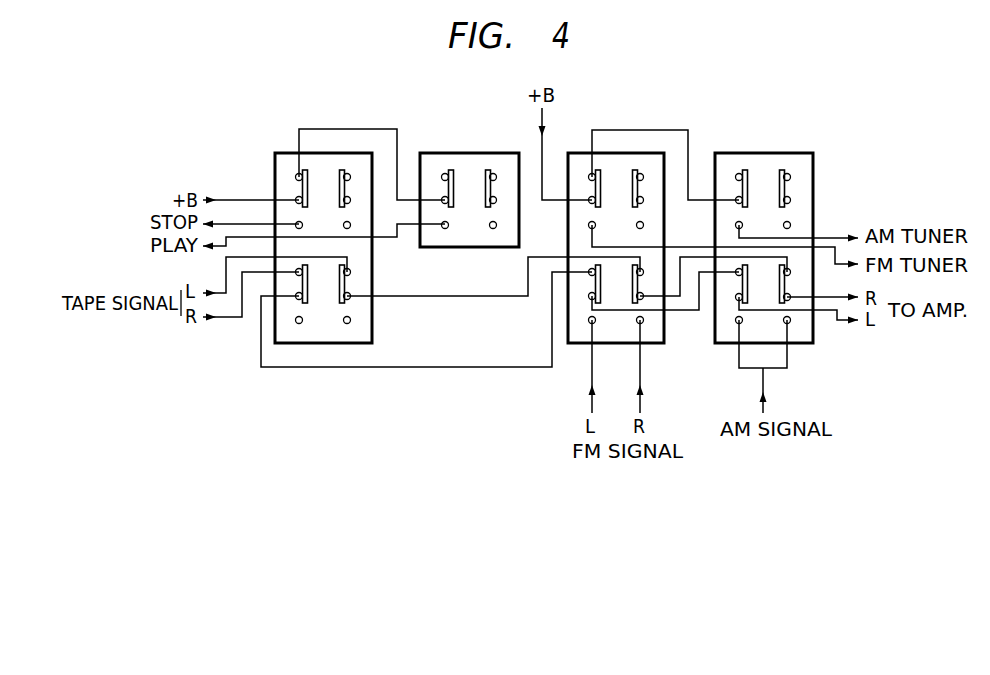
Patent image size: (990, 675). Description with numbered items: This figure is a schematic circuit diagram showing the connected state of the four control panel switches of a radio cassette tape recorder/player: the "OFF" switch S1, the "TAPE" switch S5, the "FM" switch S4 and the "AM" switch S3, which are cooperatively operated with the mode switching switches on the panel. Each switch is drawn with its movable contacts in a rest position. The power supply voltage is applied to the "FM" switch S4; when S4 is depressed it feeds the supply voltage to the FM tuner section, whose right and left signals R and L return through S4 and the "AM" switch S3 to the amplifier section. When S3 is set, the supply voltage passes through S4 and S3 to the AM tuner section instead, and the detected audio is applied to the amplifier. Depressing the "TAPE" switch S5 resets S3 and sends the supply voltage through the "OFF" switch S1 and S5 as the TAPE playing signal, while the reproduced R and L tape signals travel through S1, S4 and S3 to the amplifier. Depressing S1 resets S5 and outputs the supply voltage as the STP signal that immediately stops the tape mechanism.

The "OFF" switch S1 is at (283, 153).
The "AM" switch S3 is at (758, 153).
The "FM" switch S4 is at (577, 153).
The "TAPE" switch S5 is at (452, 153).